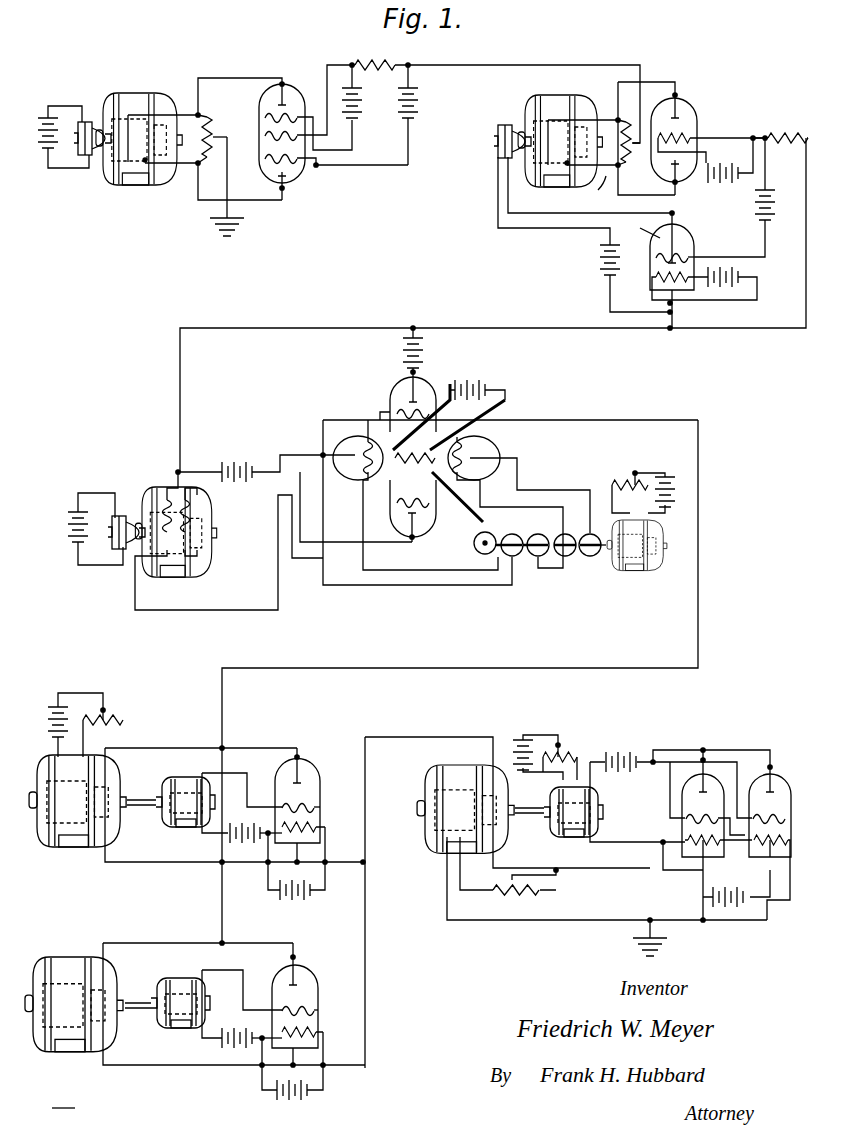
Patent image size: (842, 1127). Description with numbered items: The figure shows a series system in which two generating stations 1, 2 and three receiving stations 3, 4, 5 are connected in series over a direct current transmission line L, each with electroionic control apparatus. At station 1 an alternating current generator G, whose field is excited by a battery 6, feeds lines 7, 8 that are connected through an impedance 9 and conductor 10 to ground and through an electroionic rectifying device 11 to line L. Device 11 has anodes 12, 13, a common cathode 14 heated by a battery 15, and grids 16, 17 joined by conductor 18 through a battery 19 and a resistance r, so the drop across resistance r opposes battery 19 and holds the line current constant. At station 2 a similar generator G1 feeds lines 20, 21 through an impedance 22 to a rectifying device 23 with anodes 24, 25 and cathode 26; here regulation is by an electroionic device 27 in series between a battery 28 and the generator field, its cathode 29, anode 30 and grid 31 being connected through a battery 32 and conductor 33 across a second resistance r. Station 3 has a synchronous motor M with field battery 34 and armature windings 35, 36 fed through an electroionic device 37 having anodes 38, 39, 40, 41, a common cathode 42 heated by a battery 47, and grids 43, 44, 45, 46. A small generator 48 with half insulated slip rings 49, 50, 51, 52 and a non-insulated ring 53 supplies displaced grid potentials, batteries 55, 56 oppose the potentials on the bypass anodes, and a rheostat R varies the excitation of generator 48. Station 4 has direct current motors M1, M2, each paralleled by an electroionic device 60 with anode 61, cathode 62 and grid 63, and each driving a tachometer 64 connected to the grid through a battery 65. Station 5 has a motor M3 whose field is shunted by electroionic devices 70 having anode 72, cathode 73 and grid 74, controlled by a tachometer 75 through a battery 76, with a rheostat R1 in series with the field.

The generating station 1 is at (415, 139).
The generating station 2 is at (634, 190).
The receiving station 3 is at (366, 468).
The receiving station 4 is at (186, 896).
The receiving station 5 is at (581, 830).
The battery 6 is at (42, 111).
The line 7 is at (190, 118).
The line 8 is at (198, 163).
The impedance 9 is at (212, 136).
The conductor 10 is at (228, 181).
The electroionic rectifying device 11 is at (308, 78).
The anode 12 is at (280, 100).
The anode 13 is at (284, 183).
The common cathode 14 is at (265, 137).
The battery 15 is at (357, 122).
The grid 16 is at (265, 118).
The grid 17 is at (303, 172).
The conductor 18 is at (382, 166).
The battery 19 is at (416, 116).
The line 20 is at (600, 117).
The line 21 is at (597, 188).
The impedance 22 is at (627, 170).
The electroionic rectifying device 23 is at (685, 110).
The anode 24 is at (670, 106).
The anode 25 is at (678, 180).
The common cathode 26 is at (685, 137).
The electroionic device 27 is at (684, 228).
The battery 28 is at (598, 270).
The cathode 29 is at (654, 276).
The anode 30 is at (642, 231).
The grid 31 is at (690, 260).
The battery 32 is at (755, 204).
The conductor 33 is at (674, 313).
The battery 34 is at (66, 521).
The armature winding 35 is at (154, 499).
The armature winding 36 is at (185, 487).
The electroionic device 37 is at (394, 391).
The anode 38 is at (350, 447).
The anode 39 is at (420, 537).
The anode 40 is at (487, 458).
The anode 41 is at (418, 400).
The common cathode 42 is at (384, 418).
The grid 43 is at (362, 478).
The grid 44 is at (397, 512).
The grid 45 is at (462, 458).
The grid 46 is at (440, 398).
The battery 47 is at (486, 385).
The alternating current generator 48 is at (642, 572).
The half insulated slip ring 49 is at (588, 556).
The half insulated slip ring 50 is at (567, 562).
The half insulated slip ring 51 is at (540, 558).
The half insulated slip ring 52 is at (519, 560).
The non-insulated slip ring 53 is at (482, 554).
The battery 55 is at (255, 465).
The battery 56 is at (405, 345).
The electroionic device 60 is at (278, 771).
The anode 61 is at (312, 770).
The heated cathode 62 is at (316, 828).
The grid 63 is at (316, 808).
The tachometer 64 is at (180, 778).
The battery 65 is at (246, 848).
The electroionic device 70 is at (688, 764).
The anode 72 is at (708, 806).
The heated cathode 73 is at (688, 840).
The grid 74 is at (720, 817).
The tachometer 75 is at (577, 838).
The battery 76 is at (635, 752).
The alternating current generator G is at (147, 128).
The generator G1 is at (568, 86).
The A. C. motor M is at (175, 512).
The direct current motor M1 is at (42, 766).
The direct current motor M2 is at (46, 956).
The direct current motor M3 is at (468, 760).
The adjustable rheostat R is at (626, 472).
The rheostat R1 is at (539, 890).
The resistance r is at (373, 77).
The transmission line L is at (489, 66).